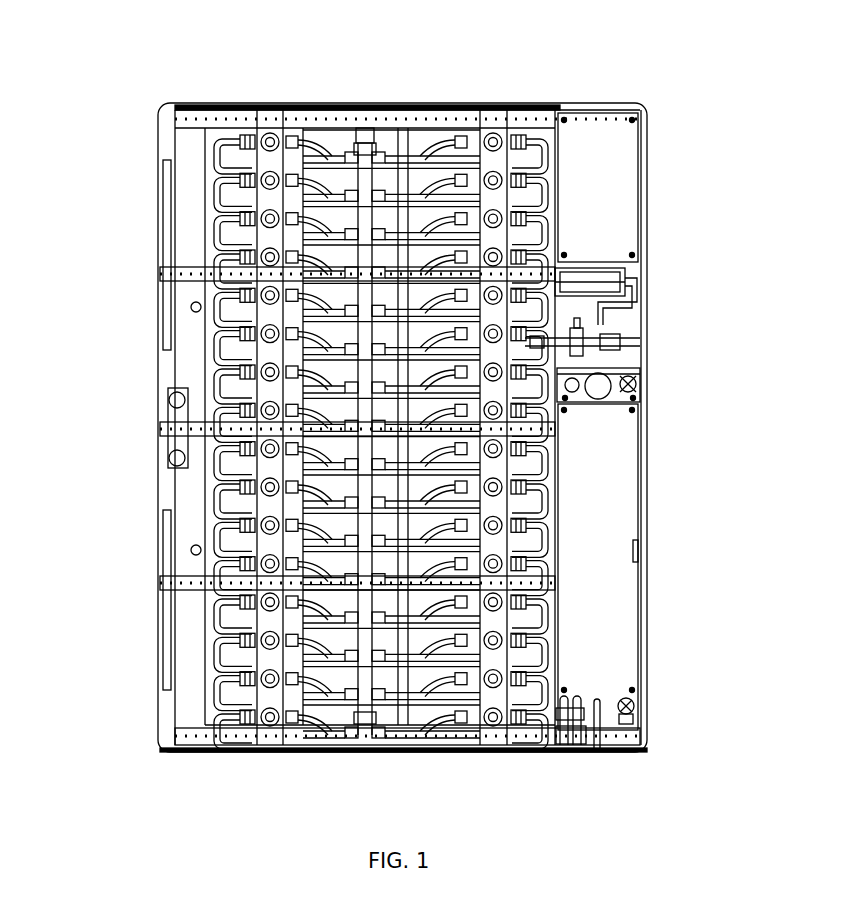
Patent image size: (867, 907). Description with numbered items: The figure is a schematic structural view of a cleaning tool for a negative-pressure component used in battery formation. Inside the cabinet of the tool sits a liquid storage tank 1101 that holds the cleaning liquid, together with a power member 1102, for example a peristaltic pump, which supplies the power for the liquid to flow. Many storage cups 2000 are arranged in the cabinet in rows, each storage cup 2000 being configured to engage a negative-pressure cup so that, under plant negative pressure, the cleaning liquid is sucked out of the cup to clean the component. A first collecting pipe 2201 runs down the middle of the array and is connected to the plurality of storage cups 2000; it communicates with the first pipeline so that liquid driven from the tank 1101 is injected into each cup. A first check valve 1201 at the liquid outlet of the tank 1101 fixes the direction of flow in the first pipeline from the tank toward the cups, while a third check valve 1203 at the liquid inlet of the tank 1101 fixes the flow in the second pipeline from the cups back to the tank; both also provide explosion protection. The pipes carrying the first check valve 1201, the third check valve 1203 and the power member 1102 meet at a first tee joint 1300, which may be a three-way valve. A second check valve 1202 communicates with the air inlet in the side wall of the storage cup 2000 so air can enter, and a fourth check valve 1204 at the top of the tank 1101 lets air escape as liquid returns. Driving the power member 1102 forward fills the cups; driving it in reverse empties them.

The liquid storage tank 1101 is at (612, 575).
The power member 1102 is at (620, 286).
The first check valve 1201 is at (555, 228).
The second check valve 1202 is at (635, 378).
The third check valve 1203 is at (550, 452).
The fourth check valve 1204 is at (622, 704).
The first tee joint 1300 is at (578, 338).
The storage cup 2000 is at (258, 453).
The first collecting pipe 2201 is at (358, 148).